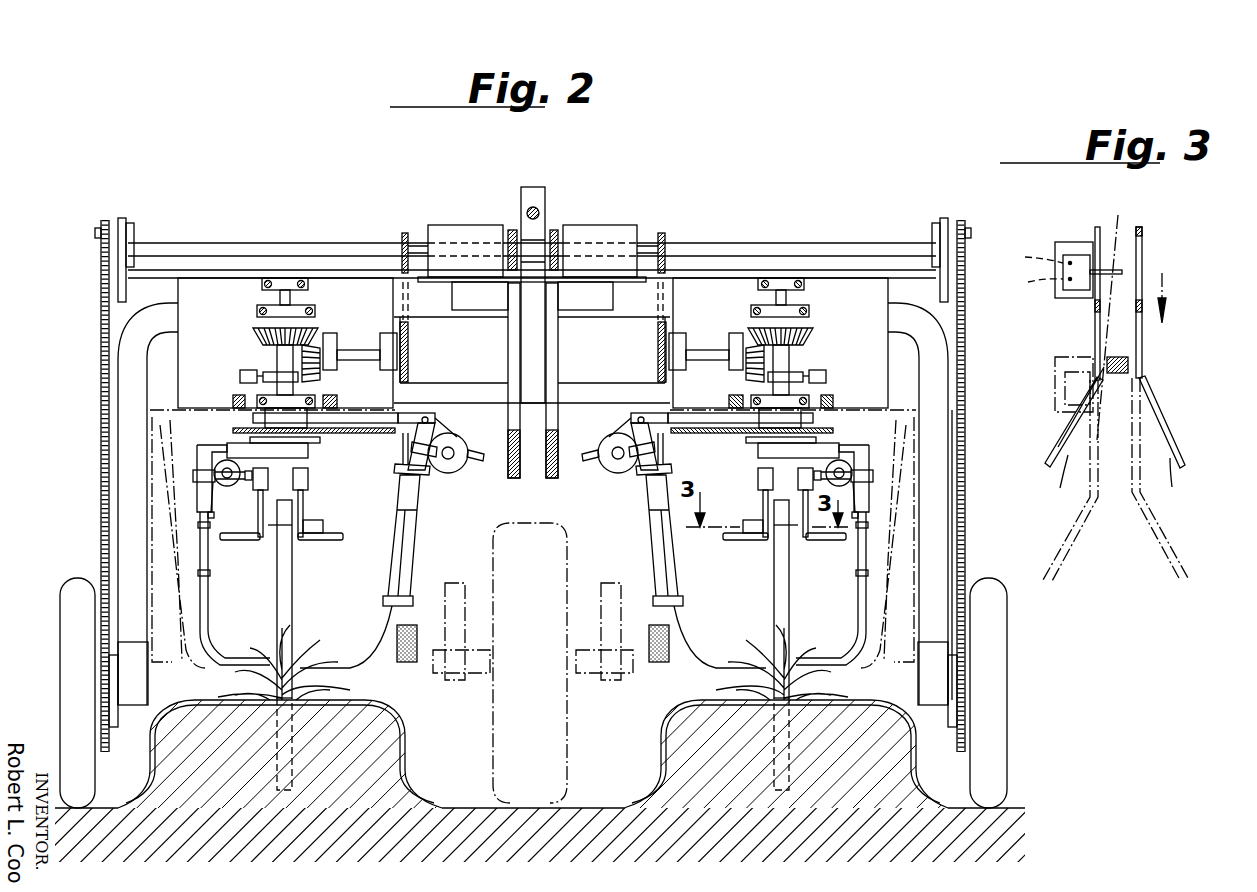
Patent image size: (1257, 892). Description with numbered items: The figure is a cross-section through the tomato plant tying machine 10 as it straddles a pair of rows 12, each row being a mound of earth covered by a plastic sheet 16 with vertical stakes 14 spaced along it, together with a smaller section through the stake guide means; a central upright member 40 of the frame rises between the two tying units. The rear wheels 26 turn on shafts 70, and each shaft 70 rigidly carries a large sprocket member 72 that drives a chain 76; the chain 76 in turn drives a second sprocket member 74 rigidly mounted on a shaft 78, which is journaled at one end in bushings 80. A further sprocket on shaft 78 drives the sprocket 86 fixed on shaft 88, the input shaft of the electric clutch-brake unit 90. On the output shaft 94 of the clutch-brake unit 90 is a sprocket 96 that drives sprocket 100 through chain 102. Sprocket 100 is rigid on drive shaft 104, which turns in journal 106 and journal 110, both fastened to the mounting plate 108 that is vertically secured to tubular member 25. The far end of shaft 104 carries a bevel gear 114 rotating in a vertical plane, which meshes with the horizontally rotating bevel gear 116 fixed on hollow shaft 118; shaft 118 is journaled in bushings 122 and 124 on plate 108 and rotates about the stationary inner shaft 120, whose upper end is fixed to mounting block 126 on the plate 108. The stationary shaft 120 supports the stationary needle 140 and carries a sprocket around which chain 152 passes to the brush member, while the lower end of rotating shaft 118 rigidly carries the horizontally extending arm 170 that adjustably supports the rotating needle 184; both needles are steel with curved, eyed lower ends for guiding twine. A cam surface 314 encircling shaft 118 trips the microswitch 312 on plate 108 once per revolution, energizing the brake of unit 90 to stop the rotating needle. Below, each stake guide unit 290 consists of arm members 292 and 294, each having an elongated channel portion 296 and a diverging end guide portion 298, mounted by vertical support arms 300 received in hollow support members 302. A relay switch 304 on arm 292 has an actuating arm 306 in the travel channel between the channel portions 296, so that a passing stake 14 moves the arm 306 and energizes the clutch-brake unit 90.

In FIG. 2, the tomato plant tying machine 10 is at (538, 510).
In FIG. 2, the rows 12 is at (422, 743).
In FIG. 3, the vertical stakes 14 is at (1128, 363).
In FIG. 2, the plastic sheet 16 is at (400, 732).
In FIG. 2, the tubular member 25 is at (558, 362).
In FIG. 2, the rear wheels 26 is at (83, 767).
In FIG. 2, the central upright post 40 is at (536, 207).
In FIG. 2, the shafts 70 is at (112, 690).
In FIG. 2, the large sprocket member 72 is at (108, 665).
In FIG. 2, the second sprocket member 74 is at (101, 226).
In FIG. 2, the chain 76 is at (956, 505).
In FIG. 2, the shaft 78 is at (233, 243).
In FIG. 2, the bushings 80 is at (122, 218).
In FIG. 2, the sprocket 86 is at (521, 243).
In FIG. 2, the shaft 88 is at (506, 250).
In FIG. 2, the electric clutch-brake unit 90 is at (468, 225).
In FIG. 2, the output shaft 94 is at (418, 245).
In FIG. 2, the sprocket 96 is at (404, 233).
In FIG. 2, the sprocket 100 is at (408, 365).
In FIG. 2, the chain 102 is at (410, 302).
In FIG. 2, the drive shaft 104 is at (370, 348).
In FIG. 2, the journal 106 is at (408, 340).
In FIG. 2, the mounting plate 108 is at (352, 280).
In FIG. 2, the journal 110 is at (330, 340).
In FIG. 2, the bevel gear 114 is at (318, 335).
In FIG. 2, the bevel gear 116 is at (258, 337).
In FIG. 2, the hollow shaft 118 is at (280, 352).
In FIG. 2, the inner shaft 120 is at (288, 300).
In FIG. 2, the bushing 122 is at (262, 311).
In FIG. 2, the bushing 124 is at (240, 380).
In FIG. 2, the mounting block 126 is at (280, 278).
In FIG. 2, the stationary needle 140 is at (208, 605).
In FIG. 2, the chain 152 is at (311, 452).
In FIG. 2, the horizontally extending arm 170 is at (358, 415).
In FIG. 2, the needle 184 is at (403, 573).
In FIG. 2, the stake guide units 290 is at (314, 513).
In FIG. 2, the arm member 292 is at (256, 540).
In FIG. 3, the arm member 292 is at (1069, 447).
In FIG. 2, the arm member 294 is at (338, 543).
In FIG. 3, the arm member 294 is at (1170, 450).
In FIG. 3, the elongated channel portion 296 is at (1142, 232).
In FIG. 3, the diverging end guide portion 298 is at (1063, 434).
In FIG. 2, the vertical support arms 300 is at (762, 505).
In FIG. 3, the vertical support arms 300 is at (1136, 303).
In FIG. 2, the hollow support members 302 is at (310, 478).
In FIG. 3, the relay switch 304 is at (1078, 255).
In FIG. 3, the actuating arm 306 is at (1120, 216).
In FIG. 2, the microswitch 312 is at (245, 372).
In FIG. 2, the cam surface 314 is at (275, 373).